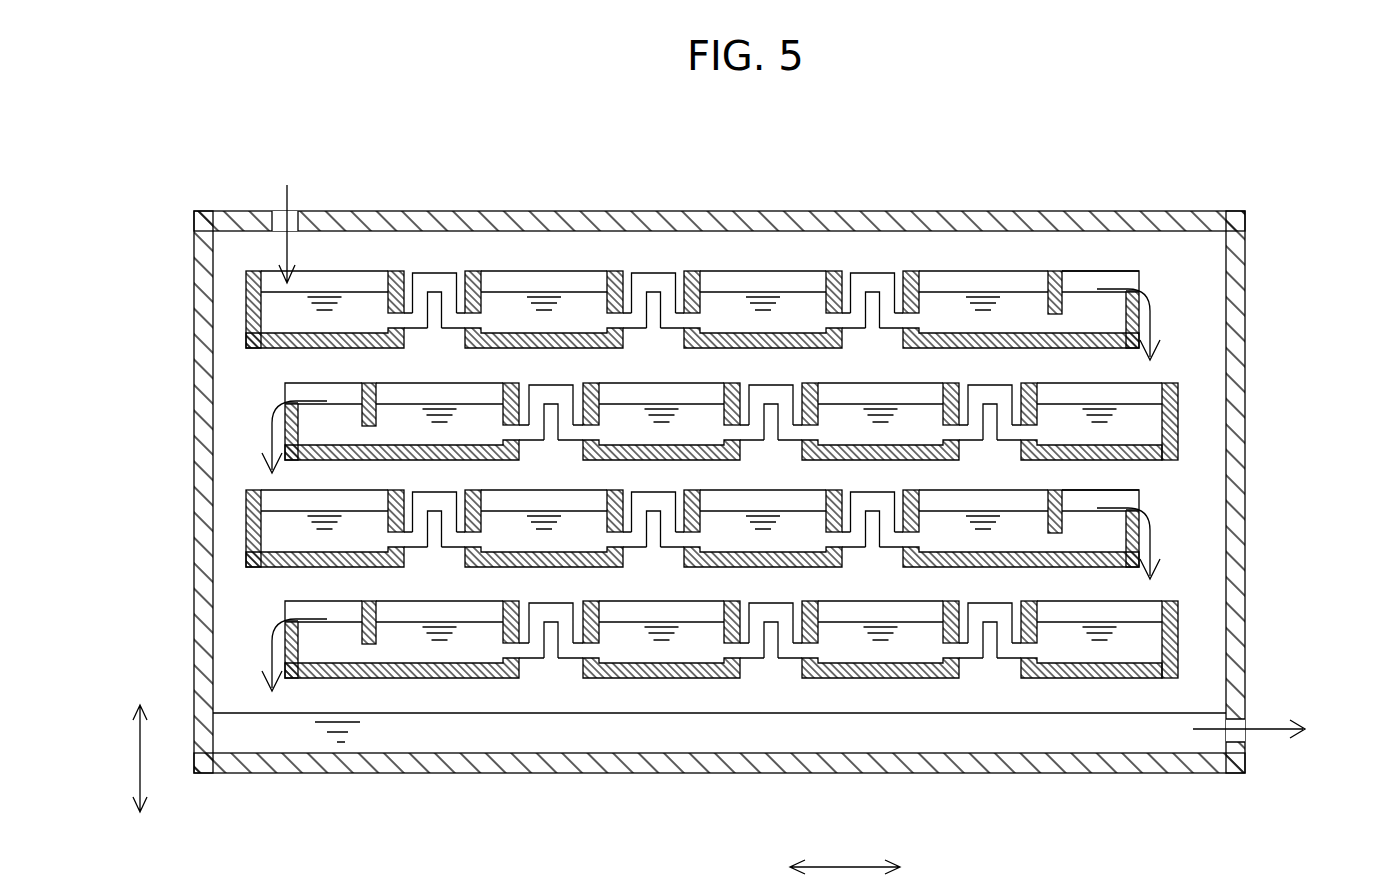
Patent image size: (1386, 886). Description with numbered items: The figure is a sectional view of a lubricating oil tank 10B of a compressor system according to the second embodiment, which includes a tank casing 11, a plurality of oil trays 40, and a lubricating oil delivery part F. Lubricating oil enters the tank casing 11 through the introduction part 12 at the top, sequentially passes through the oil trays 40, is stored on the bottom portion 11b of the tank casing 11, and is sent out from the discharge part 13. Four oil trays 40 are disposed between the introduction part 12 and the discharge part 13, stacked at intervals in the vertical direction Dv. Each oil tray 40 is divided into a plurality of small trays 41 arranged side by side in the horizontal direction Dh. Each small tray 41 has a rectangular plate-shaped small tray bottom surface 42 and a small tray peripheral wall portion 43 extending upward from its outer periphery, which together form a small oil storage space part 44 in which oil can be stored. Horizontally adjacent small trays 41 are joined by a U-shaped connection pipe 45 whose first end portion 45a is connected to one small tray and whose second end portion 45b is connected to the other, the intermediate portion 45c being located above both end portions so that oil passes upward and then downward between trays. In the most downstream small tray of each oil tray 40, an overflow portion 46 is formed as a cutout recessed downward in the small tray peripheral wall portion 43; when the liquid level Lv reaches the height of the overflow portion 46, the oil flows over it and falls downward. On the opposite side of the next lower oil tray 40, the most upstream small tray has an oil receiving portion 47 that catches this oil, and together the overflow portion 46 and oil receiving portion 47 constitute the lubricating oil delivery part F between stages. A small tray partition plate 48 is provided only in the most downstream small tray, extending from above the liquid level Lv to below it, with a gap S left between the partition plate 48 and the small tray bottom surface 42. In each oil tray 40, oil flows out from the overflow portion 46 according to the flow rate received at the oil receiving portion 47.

The lubricating oil tank 10B is at (998, 200).
The tank casing 11 is at (777, 213).
The bottom portion 11b is at (650, 740).
The introduction part 12 is at (296, 213).
The discharge part 13 is at (1248, 735).
The oil tray 40 is at (232, 314).
The small tray 41 is at (396, 285).
The small tray bottom surface 42 is at (272, 352).
The small tray peripheral wall portion 43 is at (252, 272).
The small oil storage space part 44 is at (303, 300).
The connection pipe 45 is at (452, 300).
The first end portion 45a is at (408, 322).
The second end portion 45b is at (465, 333).
The intermediate portion 45c is at (436, 273).
The overflow portion 46 is at (1140, 283).
The oil receiving portion 47 is at (262, 492).
The small tray partition plate 48 is at (1055, 290).
The gap S is at (1045, 325).
The lubricating oil delivery part F is at (1172, 350).
The liquid level Lv is at (1112, 292).
The vertical direction Dv is at (122, 758).
The horizontal direction Dh is at (845, 854).